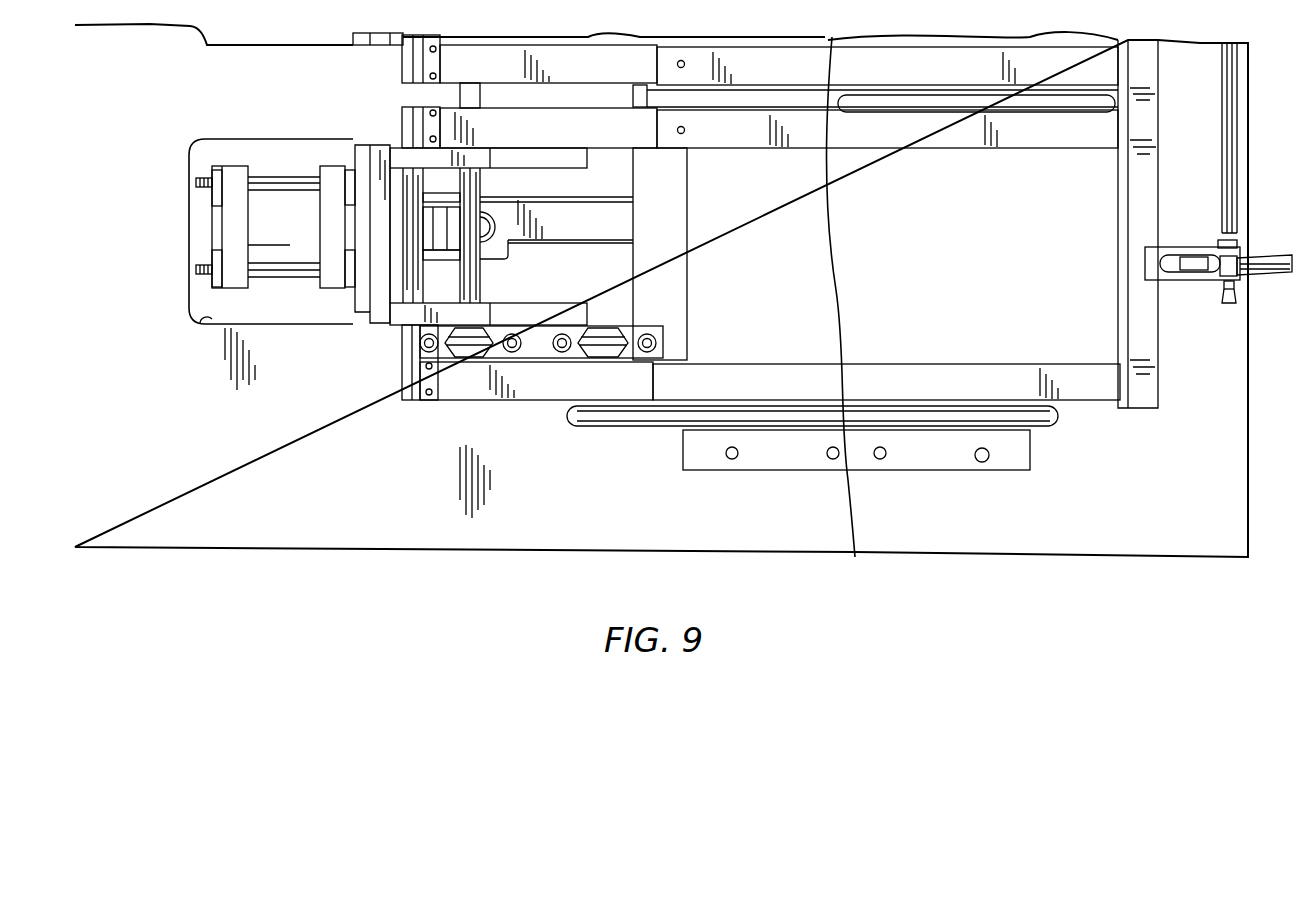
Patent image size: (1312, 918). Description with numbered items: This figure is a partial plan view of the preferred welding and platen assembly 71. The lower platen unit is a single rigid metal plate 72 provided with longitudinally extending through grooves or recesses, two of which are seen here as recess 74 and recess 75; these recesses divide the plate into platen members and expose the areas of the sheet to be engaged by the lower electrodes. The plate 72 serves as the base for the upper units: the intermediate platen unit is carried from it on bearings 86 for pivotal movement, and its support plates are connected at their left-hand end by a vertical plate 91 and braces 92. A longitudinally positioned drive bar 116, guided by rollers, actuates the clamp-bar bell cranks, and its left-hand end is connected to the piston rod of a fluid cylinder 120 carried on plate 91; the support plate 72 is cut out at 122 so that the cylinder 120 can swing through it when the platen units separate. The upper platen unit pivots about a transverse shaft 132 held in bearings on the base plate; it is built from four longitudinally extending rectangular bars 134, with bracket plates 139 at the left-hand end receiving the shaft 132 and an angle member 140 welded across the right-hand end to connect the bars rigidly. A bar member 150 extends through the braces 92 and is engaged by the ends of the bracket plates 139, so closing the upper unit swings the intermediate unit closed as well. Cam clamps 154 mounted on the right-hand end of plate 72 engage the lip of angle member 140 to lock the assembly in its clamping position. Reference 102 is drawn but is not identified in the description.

The platen assembly 71 is at (273, 577).
The plate 72 is at (1147, 547).
The recess 74 is at (997, 100).
The recess 75 is at (592, 412).
The bearings 86 is at (573, 353).
The vertical plate 91 is at (382, 318).
The braces 92 is at (557, 36).
The mounting plate 102 is at (991, 463).
The drive bar 116 is at (608, 228).
The fluid cylinder 120 is at (268, 284).
The cut-out 122 is at (193, 320).
The shaft 132 is at (472, 288).
The rectangular bars 134 is at (1085, 423).
The bracket plates 139 is at (635, 135).
The angle member 140 is at (1158, 366).
The bar member 150 is at (407, 66).
The cam clamps 154 is at (1218, 246).